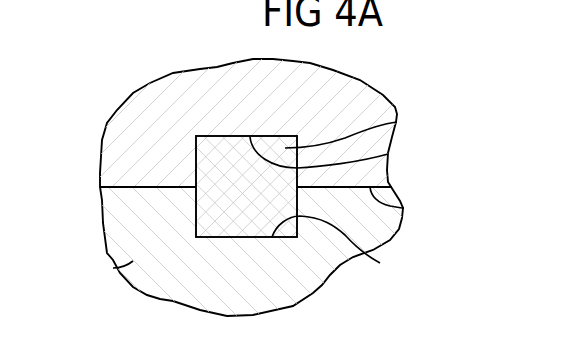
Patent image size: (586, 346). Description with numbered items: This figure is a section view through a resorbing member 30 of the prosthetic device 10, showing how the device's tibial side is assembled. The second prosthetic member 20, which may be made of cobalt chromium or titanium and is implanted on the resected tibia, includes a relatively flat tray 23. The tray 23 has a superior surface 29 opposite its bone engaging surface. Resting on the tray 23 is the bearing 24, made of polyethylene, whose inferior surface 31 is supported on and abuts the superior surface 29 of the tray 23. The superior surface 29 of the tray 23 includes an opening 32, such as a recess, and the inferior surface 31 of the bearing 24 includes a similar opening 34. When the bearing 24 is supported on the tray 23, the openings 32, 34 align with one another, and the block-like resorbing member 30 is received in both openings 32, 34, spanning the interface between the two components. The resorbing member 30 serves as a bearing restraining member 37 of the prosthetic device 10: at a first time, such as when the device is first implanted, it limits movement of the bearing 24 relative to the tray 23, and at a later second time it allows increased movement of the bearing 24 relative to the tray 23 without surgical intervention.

The prosthetic device 10 is at (106, 108).
The second prosthetic member 20 is at (170, 272).
The tray 23 is at (113, 268).
The bearing 24 is at (188, 83).
The superior surface 29 is at (133, 187).
The resorbing member 30 is at (397, 122).
The inferior surface 31 is at (404, 208).
The opening 32 is at (338, 246).
The opening 34 is at (388, 154).
The bearing restraining member 37 is at (222, 150).